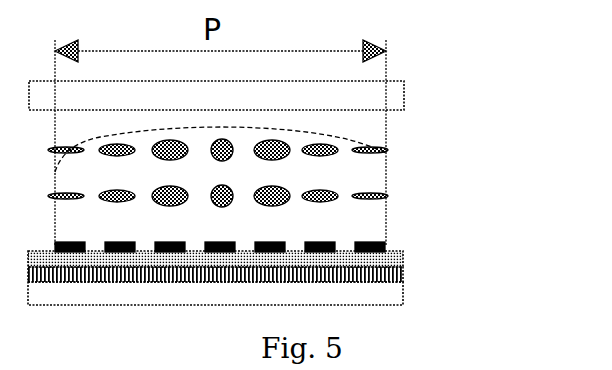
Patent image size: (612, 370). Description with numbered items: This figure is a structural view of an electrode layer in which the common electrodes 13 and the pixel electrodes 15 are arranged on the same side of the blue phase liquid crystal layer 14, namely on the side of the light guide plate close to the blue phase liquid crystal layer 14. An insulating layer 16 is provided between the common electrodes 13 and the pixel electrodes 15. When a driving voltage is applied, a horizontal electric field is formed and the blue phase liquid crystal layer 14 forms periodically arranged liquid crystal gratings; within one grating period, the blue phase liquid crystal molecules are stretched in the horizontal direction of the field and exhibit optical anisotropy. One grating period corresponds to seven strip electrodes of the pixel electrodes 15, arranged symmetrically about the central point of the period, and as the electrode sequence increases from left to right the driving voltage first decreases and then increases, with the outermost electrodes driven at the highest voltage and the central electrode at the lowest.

The common electrodes 13 is at (402, 282).
The blue phase liquid crystal layer 14 is at (386, 153).
The pixel electrodes 15 is at (380, 243).
The insulating layer 16 is at (384, 262).